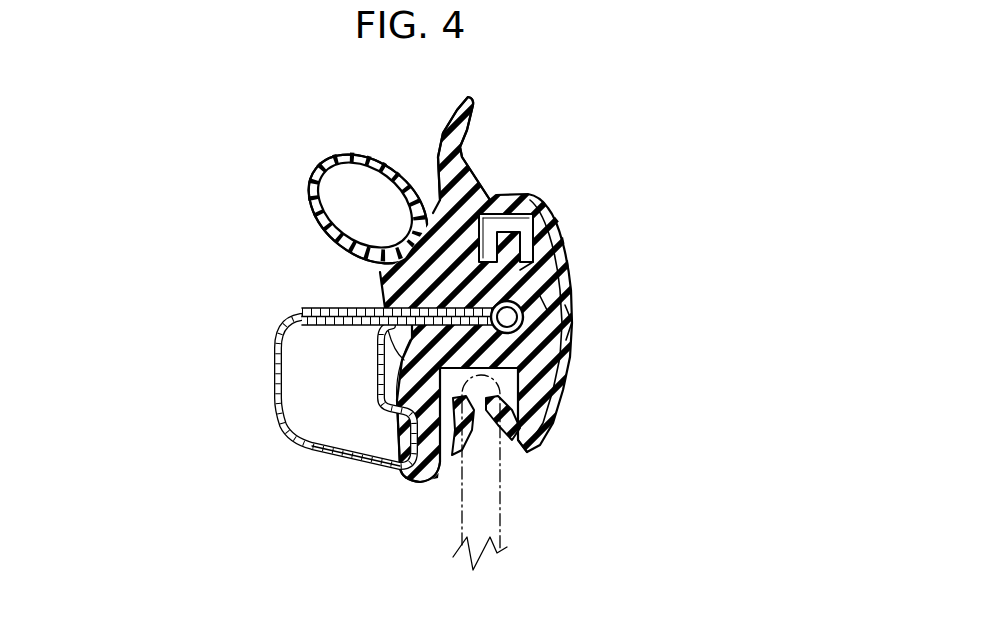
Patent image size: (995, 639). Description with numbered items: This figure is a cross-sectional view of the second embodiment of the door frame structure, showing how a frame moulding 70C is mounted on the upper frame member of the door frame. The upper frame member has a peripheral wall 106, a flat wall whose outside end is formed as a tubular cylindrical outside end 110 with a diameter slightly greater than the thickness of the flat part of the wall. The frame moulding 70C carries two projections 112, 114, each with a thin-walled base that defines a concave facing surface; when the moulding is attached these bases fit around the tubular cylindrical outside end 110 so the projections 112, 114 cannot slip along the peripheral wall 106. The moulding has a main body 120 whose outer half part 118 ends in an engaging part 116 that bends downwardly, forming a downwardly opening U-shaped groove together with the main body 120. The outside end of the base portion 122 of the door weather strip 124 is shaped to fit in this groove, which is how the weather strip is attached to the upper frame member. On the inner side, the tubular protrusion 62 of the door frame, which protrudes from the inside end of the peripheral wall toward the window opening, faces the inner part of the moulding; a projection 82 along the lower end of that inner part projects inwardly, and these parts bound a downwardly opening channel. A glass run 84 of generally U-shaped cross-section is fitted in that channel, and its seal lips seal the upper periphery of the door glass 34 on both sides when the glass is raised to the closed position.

The frame moulding 70C is at (575, 212).
The outer half part 118 is at (540, 213).
The base portion 122 is at (437, 262).
The door weather strip 124 is at (300, 164).
The engaging part 116 is at (508, 207).
The projection 112 is at (520, 256).
The tubular cylindrical outside end 110 is at (540, 296).
The main body 120 is at (568, 318).
The projection 114 is at (505, 368).
The projection 82 is at (548, 398).
The glass run 84 is at (414, 492).
The peripheral wall 106 is at (380, 308).
The tubular protrusion 62 is at (337, 458).
The door glass 34 is at (500, 498).